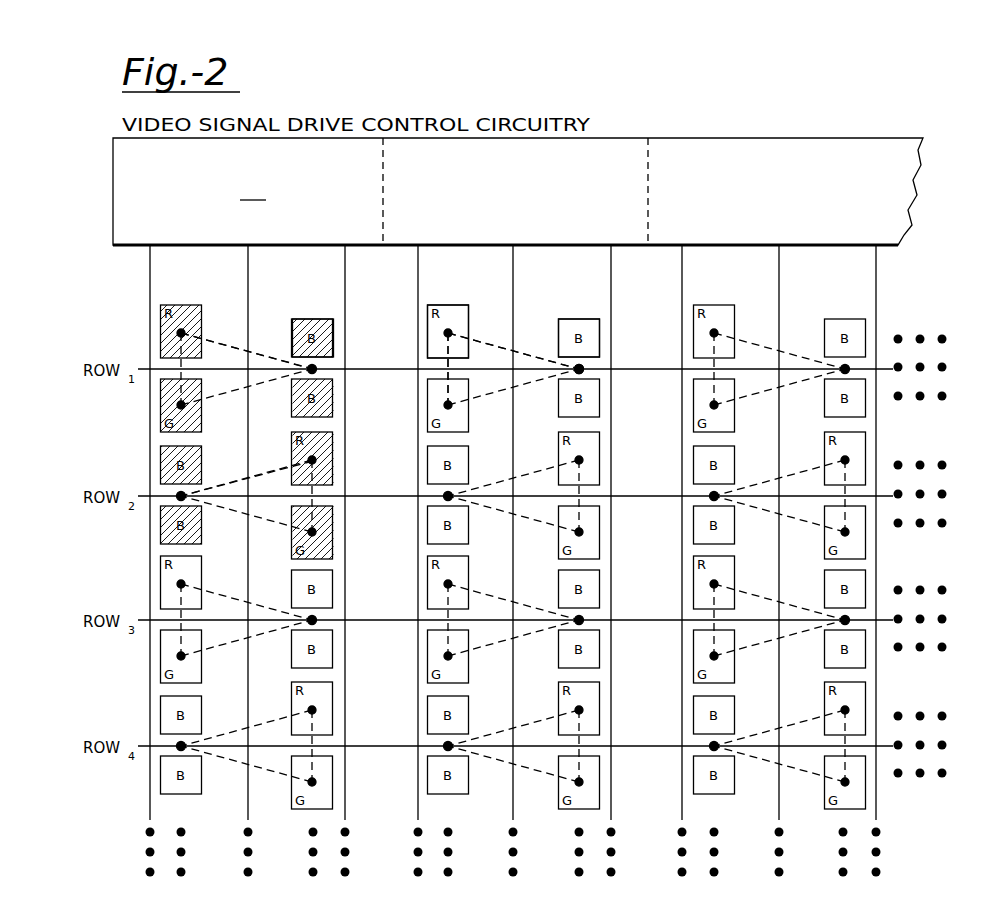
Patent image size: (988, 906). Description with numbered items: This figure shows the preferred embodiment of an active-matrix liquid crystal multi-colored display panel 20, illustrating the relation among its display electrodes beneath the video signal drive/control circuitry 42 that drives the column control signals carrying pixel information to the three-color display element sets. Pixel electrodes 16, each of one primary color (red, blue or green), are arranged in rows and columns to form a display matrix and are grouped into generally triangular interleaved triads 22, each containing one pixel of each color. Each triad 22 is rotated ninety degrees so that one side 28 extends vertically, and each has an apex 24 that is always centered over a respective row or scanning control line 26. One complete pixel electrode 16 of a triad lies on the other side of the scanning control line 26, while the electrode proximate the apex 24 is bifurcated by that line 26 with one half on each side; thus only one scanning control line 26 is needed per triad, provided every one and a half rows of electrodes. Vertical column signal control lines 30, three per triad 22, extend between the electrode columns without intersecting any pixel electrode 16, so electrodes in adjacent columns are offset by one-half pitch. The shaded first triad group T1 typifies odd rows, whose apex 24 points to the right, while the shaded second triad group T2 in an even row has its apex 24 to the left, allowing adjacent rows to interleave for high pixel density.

The pixel electrode 16 is at (316, 319).
The active-matrix liquid crystal multi-colored display panel 20 is at (716, 120).
The triad 22 is at (488, 340).
The apex 24 is at (582, 369).
The scanning control line 26 is at (145, 372).
The side of triad 28 is at (447, 373).
The column signal control line 30 is at (418, 348).
The drive/control circuitry 42 is at (755, 138).
The first triad group T1 is at (224, 343).
The second triad group T2 is at (220, 490).